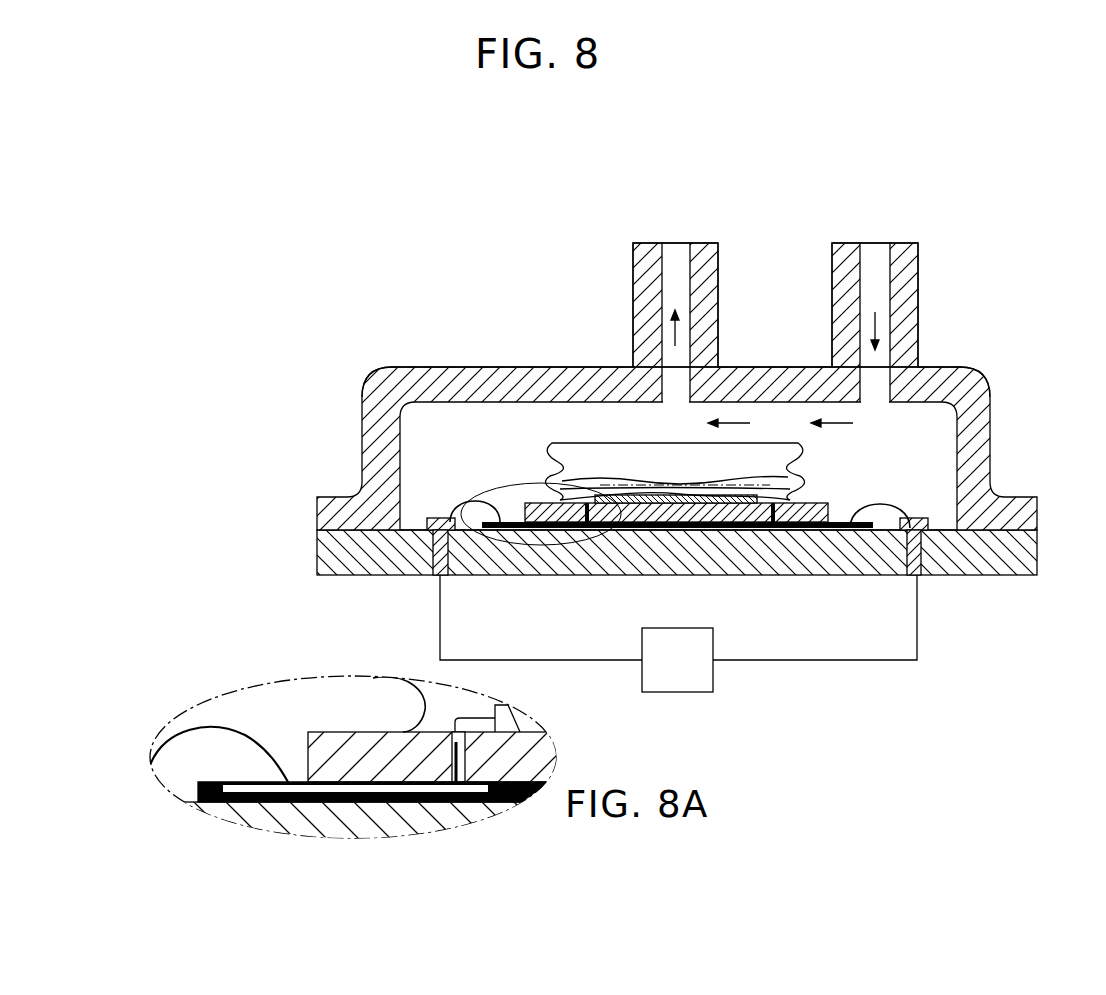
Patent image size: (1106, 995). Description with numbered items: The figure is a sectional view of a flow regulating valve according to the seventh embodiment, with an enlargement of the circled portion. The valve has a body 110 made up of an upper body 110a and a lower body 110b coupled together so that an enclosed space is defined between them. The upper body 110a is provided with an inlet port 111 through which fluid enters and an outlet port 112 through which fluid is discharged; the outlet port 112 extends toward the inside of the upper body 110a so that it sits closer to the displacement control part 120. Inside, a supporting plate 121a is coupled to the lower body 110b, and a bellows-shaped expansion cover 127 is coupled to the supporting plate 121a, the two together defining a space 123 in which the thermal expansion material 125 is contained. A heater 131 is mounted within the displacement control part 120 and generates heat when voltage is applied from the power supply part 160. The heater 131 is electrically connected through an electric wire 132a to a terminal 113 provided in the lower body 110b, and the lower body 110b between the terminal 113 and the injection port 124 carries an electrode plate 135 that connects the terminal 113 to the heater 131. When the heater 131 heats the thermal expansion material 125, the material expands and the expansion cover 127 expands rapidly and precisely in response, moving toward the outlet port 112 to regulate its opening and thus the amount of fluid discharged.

In FIG. 8, the body 110 is at (582, 409).
In FIG. 8, the upper body 110a is at (325, 515).
In FIG. 8, the lower body 110b is at (325, 557).
In FIG. 8A, the lower body 110b is at (343, 823).
In FIG. 8, the inlet port 111 is at (880, 262).
In FIG. 8, the outlet port 112 is at (682, 262).
In FIG. 8, the terminal 113 is at (924, 545).
In FIG. 8, the displacement control part 120 is at (557, 292).
In FIG. 8, the supporting plate 121a is at (537, 503).
In FIG. 8A, the supporting plate 121a is at (323, 747).
In FIG. 8, the space 123 is at (767, 456).
In FIG. 8A, the injection port 124 is at (455, 776).
In FIG. 8, the thermal expansion material 125 is at (790, 490).
In FIG. 8, the expansion cover 127 is at (607, 443).
In FIG. 8A, the expansion cover 127 is at (373, 678).
In FIG. 8, the heater 131 is at (793, 472).
In FIG. 8A, the electric wire 132a is at (462, 785).
In FIG. 8A, the electrode plate 135 is at (283, 783).
In FIG. 8, the power supply part 160 is at (717, 680).